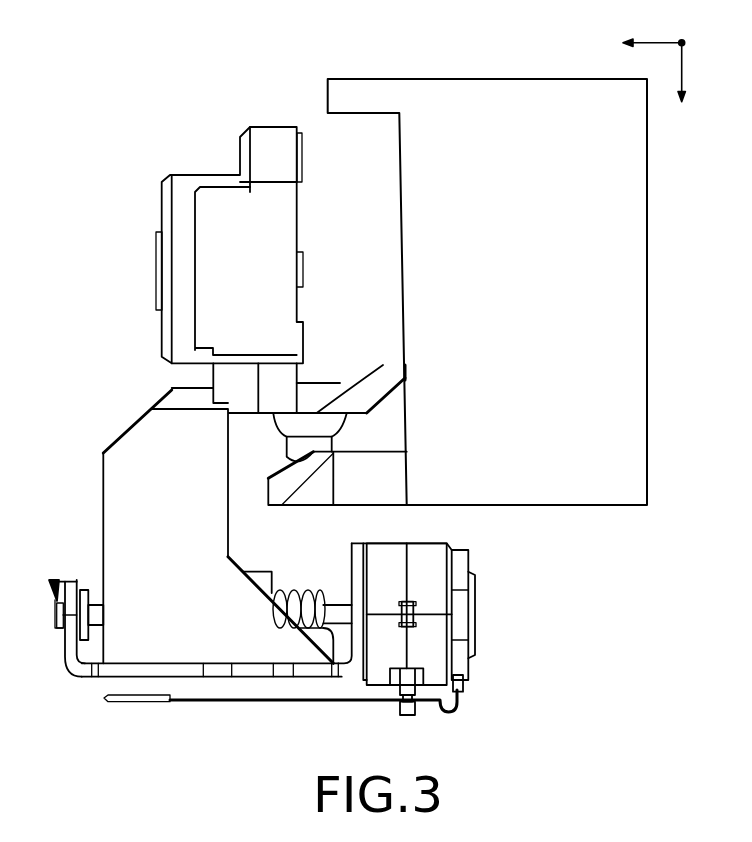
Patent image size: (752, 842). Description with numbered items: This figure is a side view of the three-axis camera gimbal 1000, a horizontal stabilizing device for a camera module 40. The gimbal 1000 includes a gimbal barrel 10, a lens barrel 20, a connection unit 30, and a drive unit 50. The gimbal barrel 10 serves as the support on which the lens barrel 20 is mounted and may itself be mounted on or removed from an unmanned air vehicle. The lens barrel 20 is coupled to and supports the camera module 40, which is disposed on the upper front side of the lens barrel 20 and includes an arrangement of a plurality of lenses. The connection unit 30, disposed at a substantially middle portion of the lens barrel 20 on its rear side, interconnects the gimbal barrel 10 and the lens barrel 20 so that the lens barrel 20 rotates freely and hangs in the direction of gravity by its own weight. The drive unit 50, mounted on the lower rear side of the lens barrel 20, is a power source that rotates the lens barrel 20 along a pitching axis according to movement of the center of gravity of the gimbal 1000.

The 3-axis camera gimbal 1000 is at (126, 85).
The gimbal barrel 10 is at (660, 252).
The lens barrel 20 is at (101, 436).
The connection unit 30 is at (269, 438).
The camera module 40 is at (190, 313).
The drive unit 50 is at (489, 618).